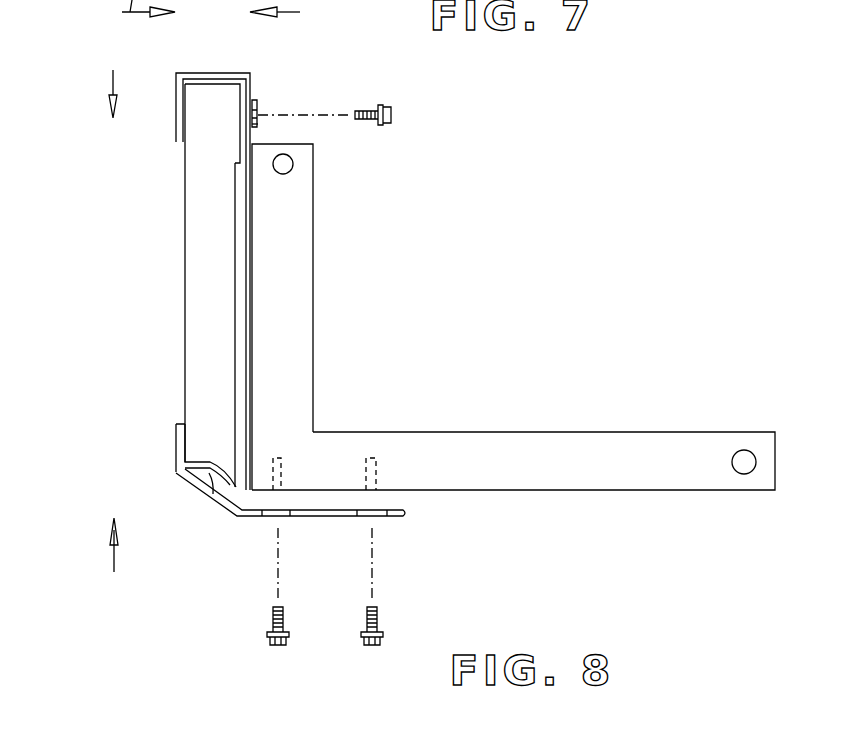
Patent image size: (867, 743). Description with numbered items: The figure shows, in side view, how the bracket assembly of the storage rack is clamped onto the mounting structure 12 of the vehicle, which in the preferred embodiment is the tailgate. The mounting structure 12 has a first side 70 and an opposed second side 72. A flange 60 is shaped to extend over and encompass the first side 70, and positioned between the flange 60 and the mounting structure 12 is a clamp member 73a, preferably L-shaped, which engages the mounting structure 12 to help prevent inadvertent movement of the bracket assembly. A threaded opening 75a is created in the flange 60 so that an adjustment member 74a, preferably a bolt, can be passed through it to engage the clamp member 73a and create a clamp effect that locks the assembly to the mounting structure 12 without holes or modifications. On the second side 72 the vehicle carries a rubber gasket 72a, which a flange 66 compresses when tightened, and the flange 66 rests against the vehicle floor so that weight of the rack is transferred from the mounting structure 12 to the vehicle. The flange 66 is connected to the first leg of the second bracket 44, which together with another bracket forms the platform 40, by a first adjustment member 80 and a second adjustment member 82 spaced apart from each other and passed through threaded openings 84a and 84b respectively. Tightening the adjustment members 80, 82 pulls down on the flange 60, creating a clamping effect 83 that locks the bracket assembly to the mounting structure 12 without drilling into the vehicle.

The mounting structure 12 is at (185, 258).
The platform 40 is at (562, 431).
The second bracket 44 is at (305, 290).
The flange 60 is at (212, 73).
The flange 66 is at (237, 516).
The first side 70 is at (206, 86).
The second side 72 is at (178, 472).
The rubber gasket 72a is at (212, 495).
The clamp member 73a is at (238, 92).
The adjustment member 74a is at (392, 108).
The threaded opening 75a is at (257, 124).
The first adjustment member 80 is at (270, 618).
The second adjustment member 82 is at (379, 614).
The clamping effect 83 is at (113, 70).
The threaded opening 84a is at (281, 460).
The threaded opening 84b is at (376, 460).